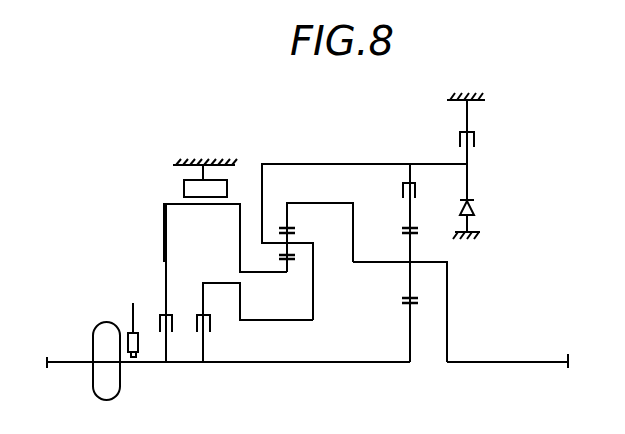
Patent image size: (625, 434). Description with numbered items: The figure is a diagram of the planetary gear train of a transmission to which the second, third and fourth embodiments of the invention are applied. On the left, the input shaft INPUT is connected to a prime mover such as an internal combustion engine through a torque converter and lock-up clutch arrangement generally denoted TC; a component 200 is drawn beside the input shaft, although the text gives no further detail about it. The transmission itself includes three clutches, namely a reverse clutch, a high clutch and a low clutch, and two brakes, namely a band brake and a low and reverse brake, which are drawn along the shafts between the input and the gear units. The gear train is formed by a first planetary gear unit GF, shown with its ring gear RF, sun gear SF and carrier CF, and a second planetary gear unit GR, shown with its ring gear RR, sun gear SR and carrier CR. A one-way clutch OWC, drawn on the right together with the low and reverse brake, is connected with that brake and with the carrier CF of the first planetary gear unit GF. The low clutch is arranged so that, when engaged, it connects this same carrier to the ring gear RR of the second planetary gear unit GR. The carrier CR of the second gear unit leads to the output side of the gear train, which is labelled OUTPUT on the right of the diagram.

The torque converter/lock-up clutch arrangement TC is at (103, 340).
The input speed sensor 200 is at (128, 325).
The first planetary gear unit GF is at (292, 184).
The front ring gear RF is at (290, 207).
The front sun gear SF is at (283, 272).
The front carrier CF is at (310, 242).
The second planetary gear unit GR is at (392, 196).
The rear ring gear RR is at (405, 213).
The rear sun gear SR is at (407, 322).
The rear carrier CR is at (377, 266).
The one-way clutch OWC is at (477, 207).
The input shaft INPUT is at (150, 365).
The output shaft OUTPUT is at (532, 363).